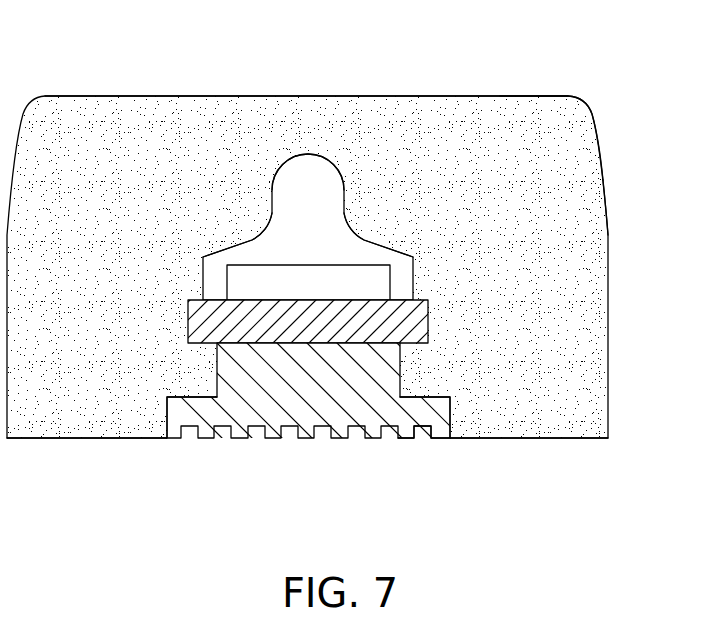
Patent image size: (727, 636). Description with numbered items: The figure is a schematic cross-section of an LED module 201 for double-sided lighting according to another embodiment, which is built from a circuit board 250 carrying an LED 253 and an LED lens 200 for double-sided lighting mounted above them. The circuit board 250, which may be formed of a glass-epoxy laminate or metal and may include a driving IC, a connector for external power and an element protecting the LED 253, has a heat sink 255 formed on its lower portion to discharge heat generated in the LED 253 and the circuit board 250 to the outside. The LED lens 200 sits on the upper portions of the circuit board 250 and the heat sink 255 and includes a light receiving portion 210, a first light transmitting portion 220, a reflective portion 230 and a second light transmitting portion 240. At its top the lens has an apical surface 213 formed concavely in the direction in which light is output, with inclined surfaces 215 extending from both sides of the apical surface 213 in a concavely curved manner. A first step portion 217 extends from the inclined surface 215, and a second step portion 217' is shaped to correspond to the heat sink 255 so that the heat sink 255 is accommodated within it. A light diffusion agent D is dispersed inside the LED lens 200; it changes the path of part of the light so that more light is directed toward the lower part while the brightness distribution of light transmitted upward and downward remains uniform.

The LED lens for double-sided lighting 200 is at (346, 231).
The LED module for double-sided lighting 201 is at (560, 79).
The light receiving portion 210 is at (258, 176).
The apical surface 213 is at (317, 155).
The inclined surfaces 215 is at (358, 237).
The first step portion 217 is at (309, 417).
The second step portion 217' is at (159, 448).
The first light transmitting portion 220 is at (279, 96).
The reflective portion 230 is at (608, 266).
The second light transmitting portion 240 is at (57, 438).
The circuit board 250 is at (250, 333).
The LED 253 is at (373, 293).
The heat sink 255 is at (423, 417).
The light diffusion agent D is at (540, 214).